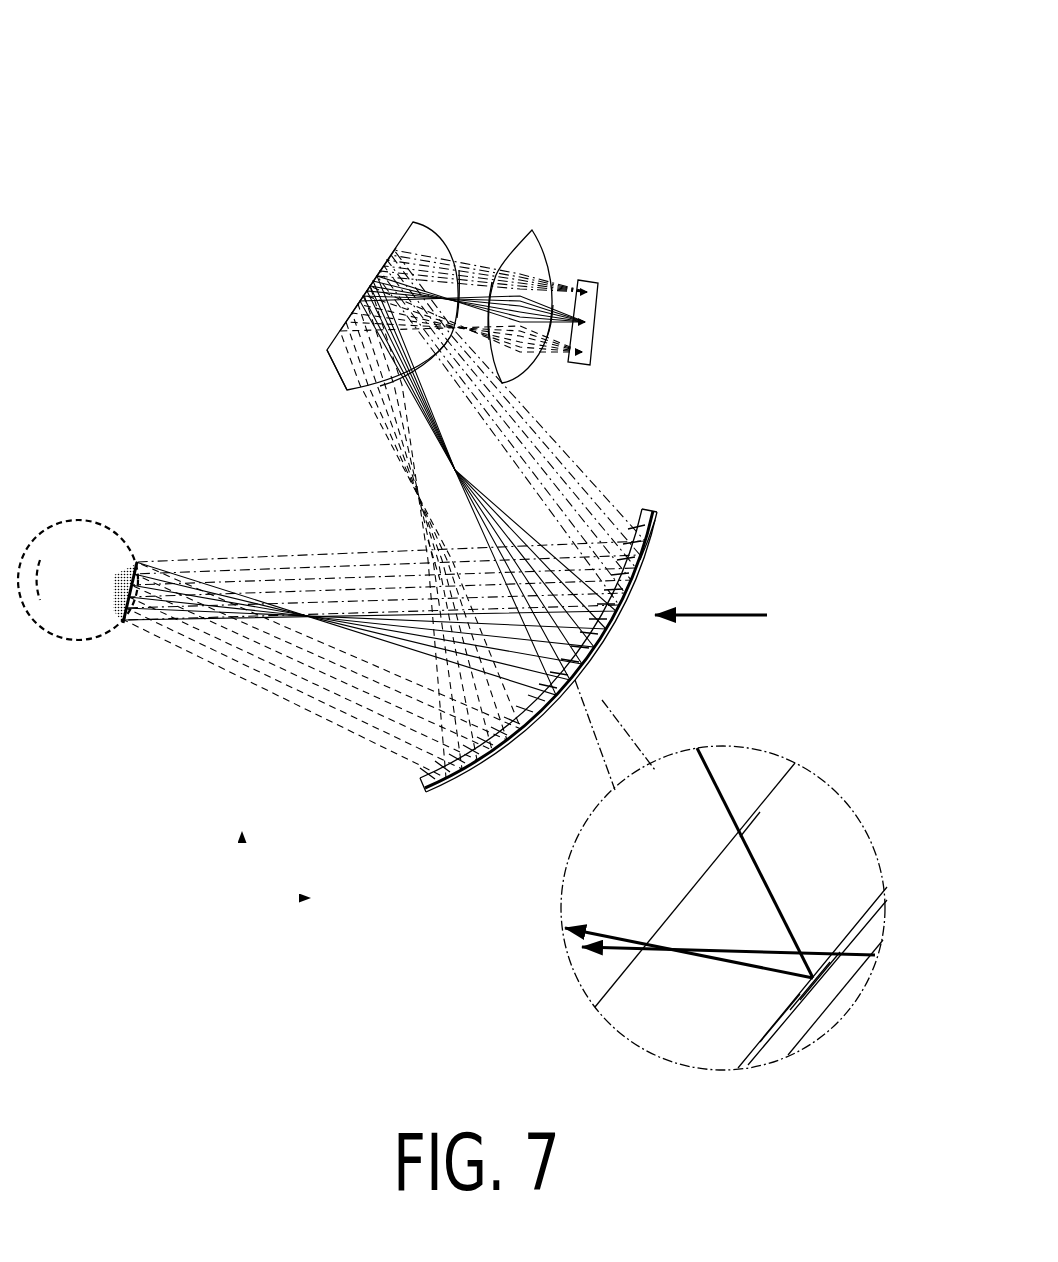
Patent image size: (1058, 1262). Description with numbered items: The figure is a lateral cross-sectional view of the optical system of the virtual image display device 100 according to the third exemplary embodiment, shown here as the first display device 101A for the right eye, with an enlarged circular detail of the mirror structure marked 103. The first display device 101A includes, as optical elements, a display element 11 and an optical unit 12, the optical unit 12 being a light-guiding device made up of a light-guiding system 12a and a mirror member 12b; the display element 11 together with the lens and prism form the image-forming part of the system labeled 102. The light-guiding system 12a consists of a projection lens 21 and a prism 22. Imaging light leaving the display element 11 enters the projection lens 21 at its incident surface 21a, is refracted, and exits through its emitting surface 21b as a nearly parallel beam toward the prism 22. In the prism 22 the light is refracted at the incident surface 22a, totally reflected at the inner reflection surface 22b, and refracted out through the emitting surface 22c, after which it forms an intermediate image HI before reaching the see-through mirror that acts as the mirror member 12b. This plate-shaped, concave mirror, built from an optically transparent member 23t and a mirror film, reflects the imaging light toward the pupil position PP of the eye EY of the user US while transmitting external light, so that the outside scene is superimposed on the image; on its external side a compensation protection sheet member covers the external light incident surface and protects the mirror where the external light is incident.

The virtual image display device 100 is at (400, 80).
The first display device 101A is at (400, 80).
The image forming unit 102 is at (477, 172).
The enlarged view portion 103 is at (688, 713).
The display element 11 is at (591, 285).
The optical unit 12 is at (207, 213).
The light-guiding system 12a is at (285, 262).
The mirror member 12b is at (627, 637).
The projection lens 21 is at (533, 258).
The incident surface 21a is at (548, 337).
The emitting surface 21b is at (493, 285).
The prism 22 is at (425, 255).
The incident surface 22a is at (480, 275).
The inner reflection surface 22b is at (390, 268).
The emitting surface 22c is at (430, 368).
The optically transparent member 23t is at (787, 817).
The eye EY is at (75, 622).
The user US is at (66, 643).
The pupil position PP is at (123, 626).
The intermediate image HI is at (400, 498).